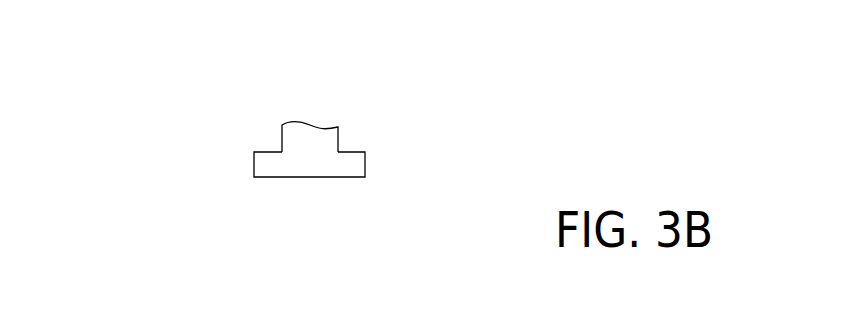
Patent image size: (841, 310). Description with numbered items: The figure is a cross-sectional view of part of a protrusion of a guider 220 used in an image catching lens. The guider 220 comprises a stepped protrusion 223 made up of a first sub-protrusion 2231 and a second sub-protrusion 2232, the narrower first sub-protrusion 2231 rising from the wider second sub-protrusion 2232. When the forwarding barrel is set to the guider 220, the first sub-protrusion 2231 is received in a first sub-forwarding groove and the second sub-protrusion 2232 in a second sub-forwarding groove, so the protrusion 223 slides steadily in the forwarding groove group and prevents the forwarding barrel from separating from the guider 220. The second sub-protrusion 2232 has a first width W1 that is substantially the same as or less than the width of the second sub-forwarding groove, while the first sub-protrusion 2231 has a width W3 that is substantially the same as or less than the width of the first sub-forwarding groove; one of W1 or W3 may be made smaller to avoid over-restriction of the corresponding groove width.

The guider 220 is at (157, 64).
The protrusion 223 is at (390, 151).
The first sub-protrusion 2231 is at (327, 139).
The second sub-protrusion 2232 is at (350, 165).
The width of the first sub-protrusion W3 is at (338, 122).
The first width of the second sub-protrusion W1 is at (365, 179).